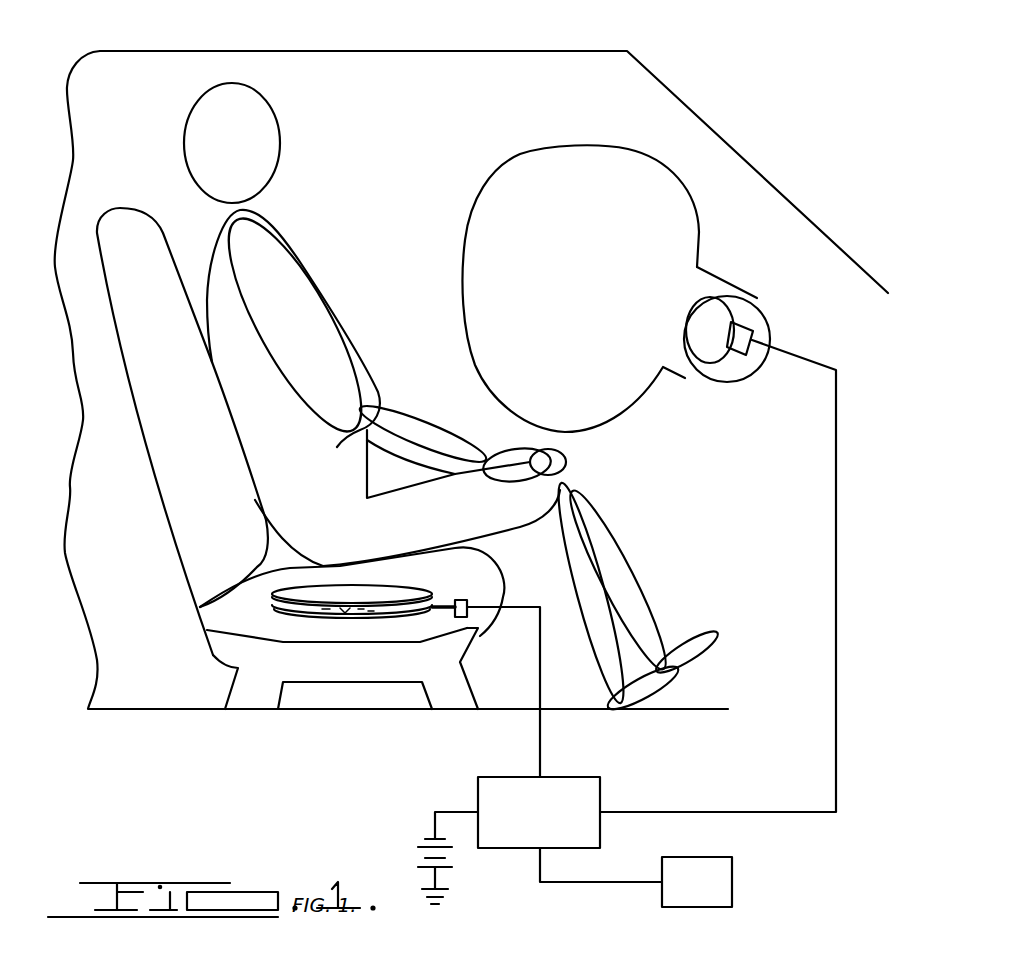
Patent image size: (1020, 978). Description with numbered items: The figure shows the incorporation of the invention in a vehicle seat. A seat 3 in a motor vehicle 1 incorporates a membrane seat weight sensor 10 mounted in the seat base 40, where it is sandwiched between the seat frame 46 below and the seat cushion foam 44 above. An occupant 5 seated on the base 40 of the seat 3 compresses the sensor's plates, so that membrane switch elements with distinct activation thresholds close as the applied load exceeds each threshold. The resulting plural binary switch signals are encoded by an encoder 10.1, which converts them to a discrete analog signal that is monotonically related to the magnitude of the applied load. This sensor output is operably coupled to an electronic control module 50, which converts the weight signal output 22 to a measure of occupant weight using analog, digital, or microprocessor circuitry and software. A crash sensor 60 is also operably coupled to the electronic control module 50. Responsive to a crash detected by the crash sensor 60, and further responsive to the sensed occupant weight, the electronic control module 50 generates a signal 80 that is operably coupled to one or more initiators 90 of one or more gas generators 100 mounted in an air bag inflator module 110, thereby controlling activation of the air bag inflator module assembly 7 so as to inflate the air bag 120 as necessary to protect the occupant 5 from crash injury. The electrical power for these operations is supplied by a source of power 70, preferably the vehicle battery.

The motor vehicle 1 is at (543, 49).
The seat 3 is at (145, 443).
The occupant 5 is at (293, 260).
The air bag inflator module assembly 7 is at (688, 178).
The membrane seat weight sensor 10 is at (337, 580).
The encoder 10.1 is at (459, 598).
The weight signal output 22 is at (538, 748).
The seat base 40 is at (522, 567).
The seat cushion foam 44 is at (230, 613).
The seat frame 46 is at (328, 667).
The electronic control module 50 is at (590, 790).
The crash sensor 60 is at (720, 875).
The source of power 70 is at (420, 860).
The signal 80 is at (837, 477).
The initiator 90 is at (748, 335).
The gas generator 100 is at (723, 307).
The air bag inflator module 110 is at (685, 381).
The air bag 120 is at (632, 157).